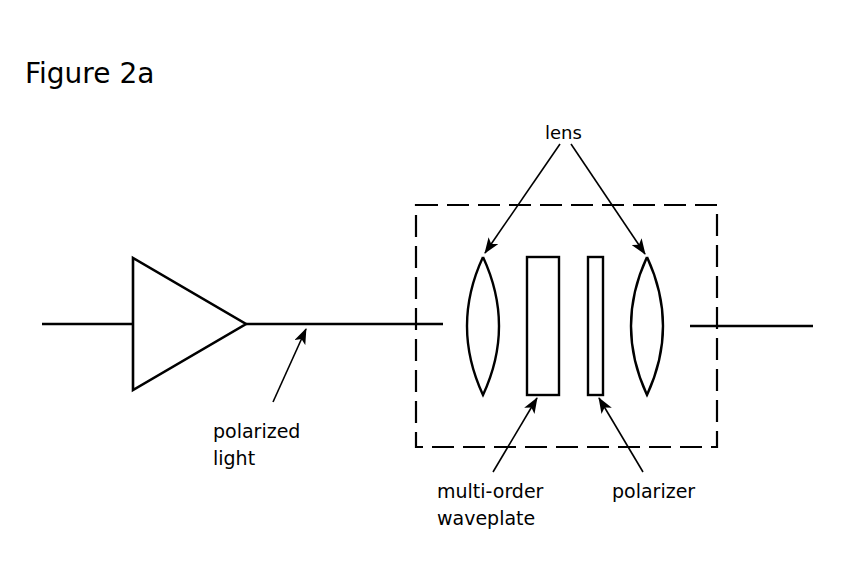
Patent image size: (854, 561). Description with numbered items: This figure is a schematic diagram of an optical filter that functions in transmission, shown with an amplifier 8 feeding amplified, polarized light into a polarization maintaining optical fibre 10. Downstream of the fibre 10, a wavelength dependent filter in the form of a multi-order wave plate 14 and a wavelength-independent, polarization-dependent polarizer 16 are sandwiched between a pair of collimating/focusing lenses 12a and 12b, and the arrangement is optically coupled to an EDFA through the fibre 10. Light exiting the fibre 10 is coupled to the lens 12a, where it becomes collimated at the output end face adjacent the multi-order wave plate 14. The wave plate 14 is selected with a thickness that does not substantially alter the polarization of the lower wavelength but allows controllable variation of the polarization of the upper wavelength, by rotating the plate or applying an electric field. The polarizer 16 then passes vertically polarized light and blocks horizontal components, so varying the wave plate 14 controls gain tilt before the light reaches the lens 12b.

The amplifier 8 is at (152, 286).
The polarization maintaining optical fibre 10 is at (366, 323).
The collimating/focusing lens 12a is at (481, 257).
The collimating/focusing lens 12b is at (649, 257).
The multi-order wave plate 14 is at (528, 388).
The polarizer 16 is at (595, 257).